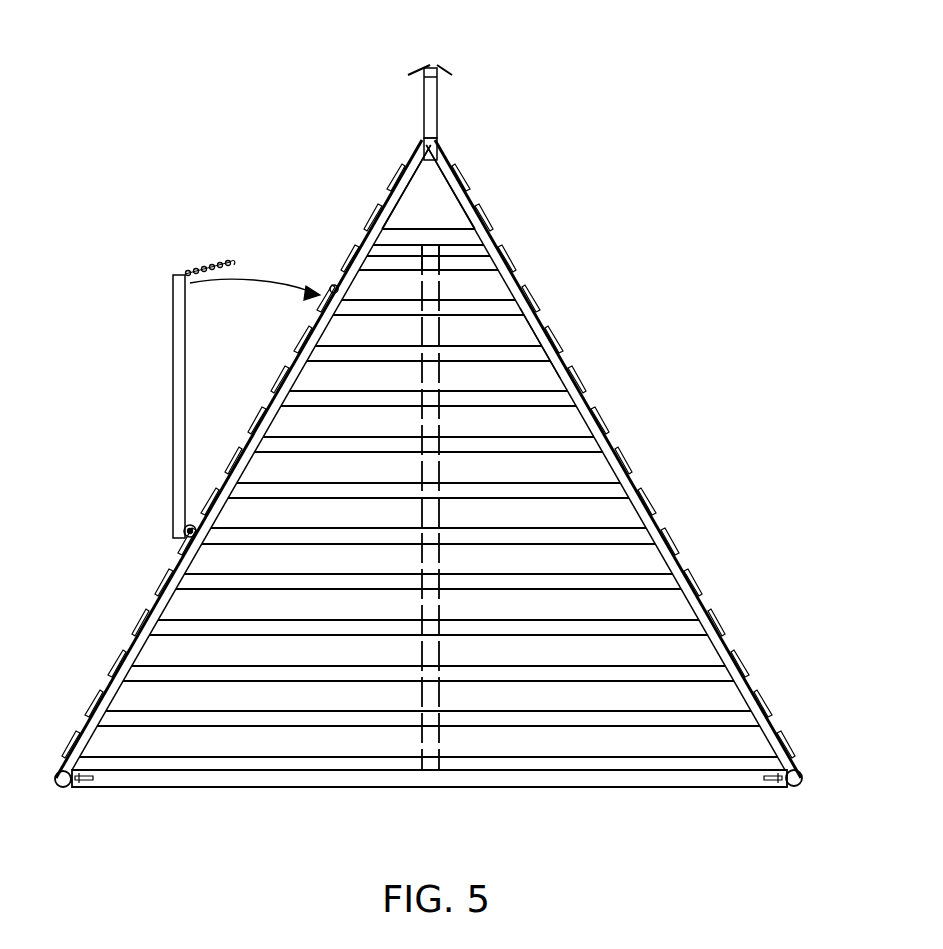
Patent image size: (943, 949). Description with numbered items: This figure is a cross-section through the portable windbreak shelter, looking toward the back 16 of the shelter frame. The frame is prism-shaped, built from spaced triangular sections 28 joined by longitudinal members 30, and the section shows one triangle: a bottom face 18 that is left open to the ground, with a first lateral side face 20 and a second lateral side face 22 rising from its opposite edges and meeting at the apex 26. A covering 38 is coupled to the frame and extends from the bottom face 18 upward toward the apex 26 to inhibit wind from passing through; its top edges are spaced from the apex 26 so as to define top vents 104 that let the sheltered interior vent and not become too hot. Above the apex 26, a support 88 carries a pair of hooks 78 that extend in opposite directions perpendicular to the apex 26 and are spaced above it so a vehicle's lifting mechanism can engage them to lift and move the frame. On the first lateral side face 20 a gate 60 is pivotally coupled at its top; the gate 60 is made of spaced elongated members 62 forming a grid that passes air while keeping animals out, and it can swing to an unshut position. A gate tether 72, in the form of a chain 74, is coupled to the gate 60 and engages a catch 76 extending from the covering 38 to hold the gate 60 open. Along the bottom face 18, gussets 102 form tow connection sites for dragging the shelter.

The back 16 is at (539, 430).
The bottom face 18 is at (221, 808).
The first lateral side face 20 is at (128, 604).
The second lateral side face 22 is at (676, 500).
The apex 26 is at (437, 148).
The triangular sections 28 is at (545, 358).
The longitudinal members 30 is at (58, 771).
The covering 38 is at (640, 738).
The gate 60 is at (175, 375).
The elongated members 62 is at (456, 240).
The gate tether 72 is at (218, 240).
The chain 74 is at (200, 268).
The catch 76 is at (331, 285).
The hooks 78 is at (410, 72).
The support 88 is at (404, 104).
The gussets 102 is at (85, 783).
The top vents 104 is at (433, 207).